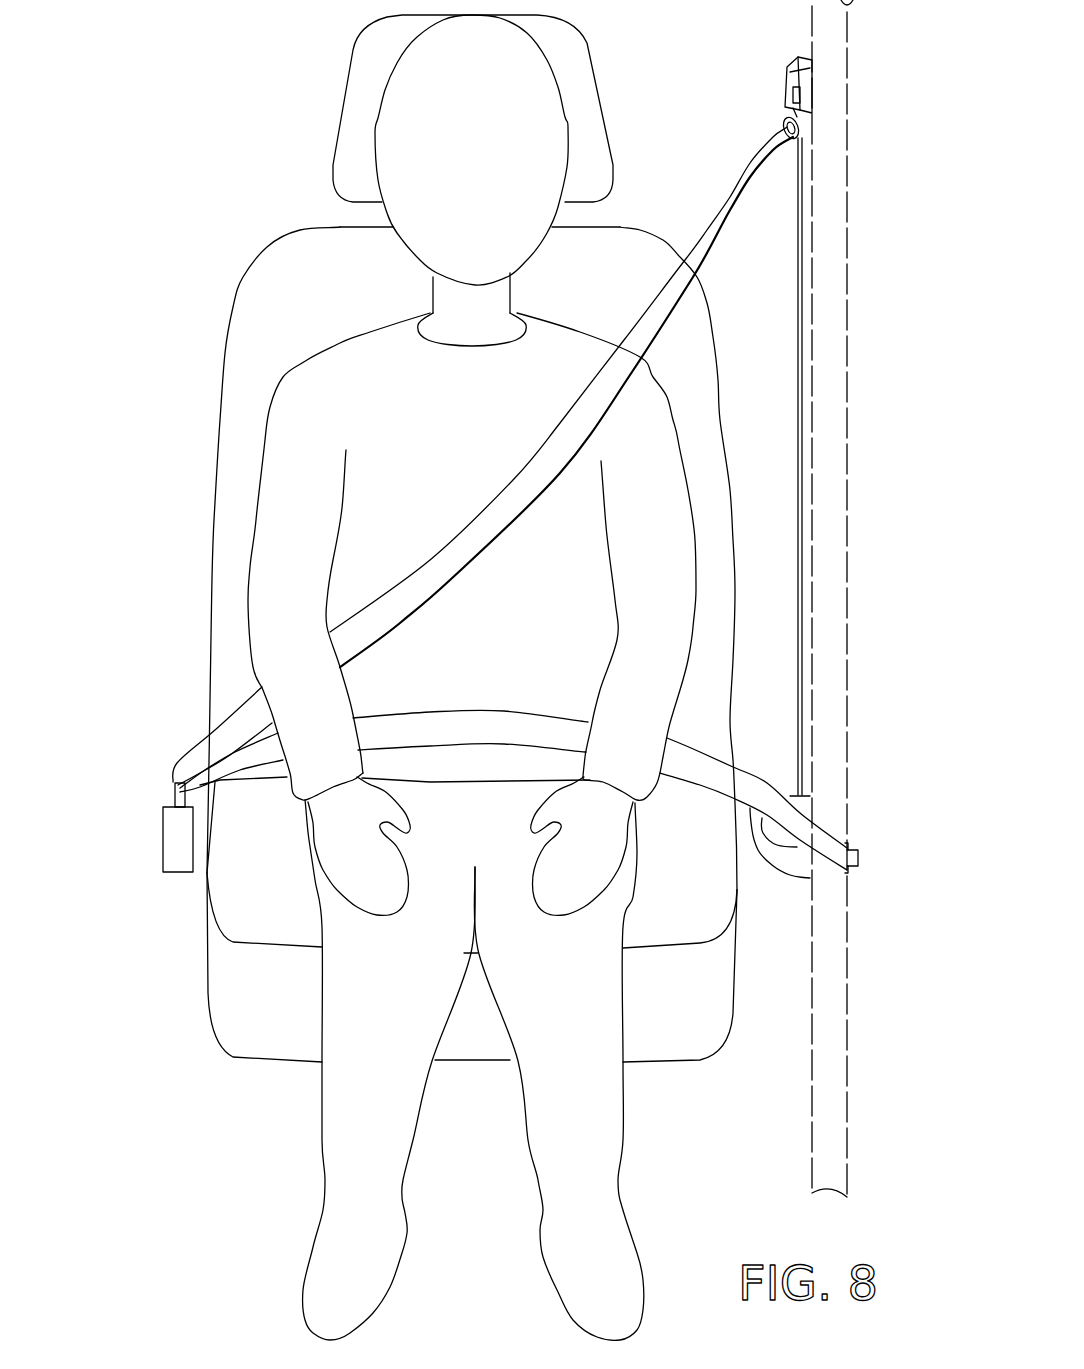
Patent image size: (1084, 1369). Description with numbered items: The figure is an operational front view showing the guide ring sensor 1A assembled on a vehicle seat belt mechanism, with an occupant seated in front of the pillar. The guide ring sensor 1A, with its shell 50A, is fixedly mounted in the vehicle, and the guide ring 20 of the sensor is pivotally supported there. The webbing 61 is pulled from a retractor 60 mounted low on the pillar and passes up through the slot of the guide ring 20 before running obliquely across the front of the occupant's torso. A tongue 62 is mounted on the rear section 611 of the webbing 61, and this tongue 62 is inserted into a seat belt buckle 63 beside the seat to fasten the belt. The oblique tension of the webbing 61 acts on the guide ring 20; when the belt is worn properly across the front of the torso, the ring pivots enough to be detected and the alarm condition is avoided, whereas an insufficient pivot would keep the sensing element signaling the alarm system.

The guide ring sensor 1A is at (752, 98).
The shell 50A is at (787, 62).
The guide ring 20 is at (786, 148).
The webbing 61 is at (804, 448).
The rear section 611 is at (232, 727).
The tongue 62 is at (173, 795).
The seat belt buckle 63 is at (177, 842).
The retractor 60 is at (795, 886).